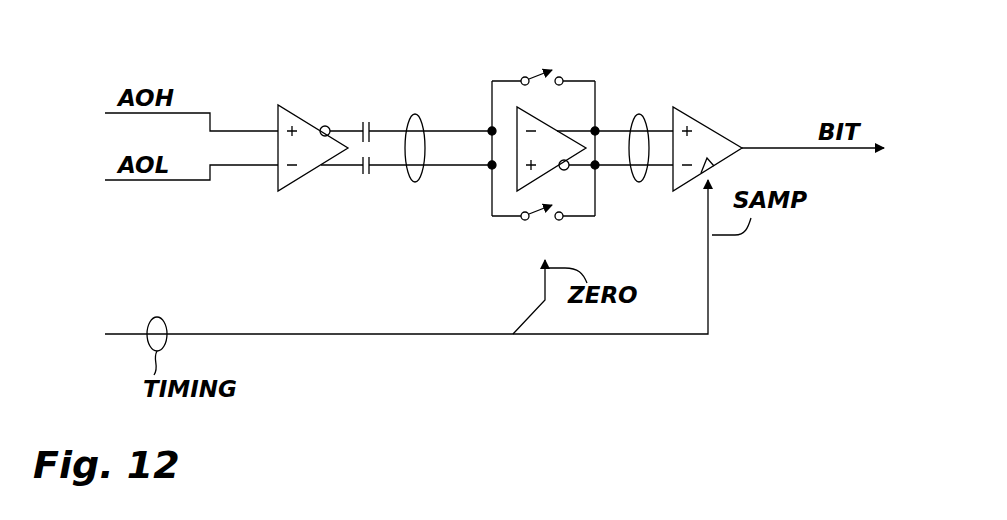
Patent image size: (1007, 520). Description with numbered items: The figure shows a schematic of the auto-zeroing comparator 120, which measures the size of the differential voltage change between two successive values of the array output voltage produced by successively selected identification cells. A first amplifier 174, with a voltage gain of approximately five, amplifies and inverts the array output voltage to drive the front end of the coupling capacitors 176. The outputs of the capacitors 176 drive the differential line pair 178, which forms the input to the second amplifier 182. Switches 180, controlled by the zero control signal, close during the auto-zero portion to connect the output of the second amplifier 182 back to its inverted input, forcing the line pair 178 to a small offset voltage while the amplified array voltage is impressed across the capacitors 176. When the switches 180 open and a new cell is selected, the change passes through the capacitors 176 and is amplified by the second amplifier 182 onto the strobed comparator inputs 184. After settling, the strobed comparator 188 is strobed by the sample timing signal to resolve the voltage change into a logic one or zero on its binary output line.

The auto-zeroing comparator 120 is at (788, 76).
The first amplifier 174 is at (307, 112).
The coupling capacitors 176 is at (367, 178).
The differential line pair 178 is at (415, 182).
The switches 180 is at (538, 63).
The second amplifier 182 is at (553, 120).
The strobed comparator inputs 184 is at (639, 182).
The strobed comparator 188 is at (704, 115).